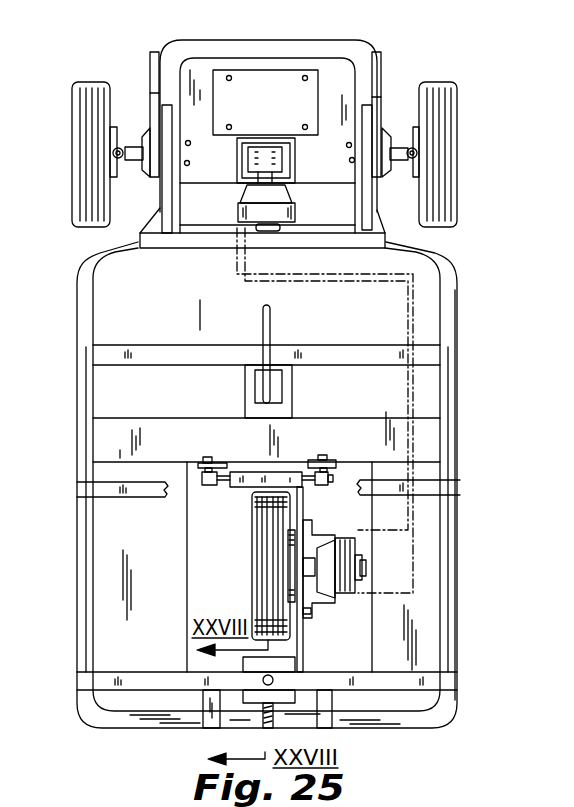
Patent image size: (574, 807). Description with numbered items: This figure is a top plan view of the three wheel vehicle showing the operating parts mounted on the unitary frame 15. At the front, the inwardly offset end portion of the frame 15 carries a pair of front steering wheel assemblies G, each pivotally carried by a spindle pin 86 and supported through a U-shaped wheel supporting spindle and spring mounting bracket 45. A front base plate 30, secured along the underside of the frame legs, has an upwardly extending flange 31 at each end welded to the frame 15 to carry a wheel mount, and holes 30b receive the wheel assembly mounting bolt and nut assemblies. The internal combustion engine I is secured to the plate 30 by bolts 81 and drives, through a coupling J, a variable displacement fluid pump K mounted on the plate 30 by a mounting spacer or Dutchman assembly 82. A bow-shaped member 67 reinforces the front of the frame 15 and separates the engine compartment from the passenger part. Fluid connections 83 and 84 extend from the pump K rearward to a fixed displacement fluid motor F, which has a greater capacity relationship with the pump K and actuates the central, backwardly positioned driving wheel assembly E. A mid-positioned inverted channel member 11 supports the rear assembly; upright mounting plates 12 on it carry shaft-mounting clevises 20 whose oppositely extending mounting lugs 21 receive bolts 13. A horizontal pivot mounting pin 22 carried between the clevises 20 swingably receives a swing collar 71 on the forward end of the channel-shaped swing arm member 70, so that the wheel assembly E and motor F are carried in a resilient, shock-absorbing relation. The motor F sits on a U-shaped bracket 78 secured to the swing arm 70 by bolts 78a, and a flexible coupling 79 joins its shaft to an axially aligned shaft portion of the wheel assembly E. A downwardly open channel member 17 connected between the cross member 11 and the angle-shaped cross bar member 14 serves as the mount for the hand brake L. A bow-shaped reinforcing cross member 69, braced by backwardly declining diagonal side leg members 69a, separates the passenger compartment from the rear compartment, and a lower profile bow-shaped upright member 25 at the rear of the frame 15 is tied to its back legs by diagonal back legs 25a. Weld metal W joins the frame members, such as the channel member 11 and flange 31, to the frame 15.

The bolts 81 is at (231, 75).
The upwardly extending flange 31 is at (378, 106).
The wheel supporting spindle and spring mounting bracket 45 is at (140, 148).
The spindle pin 86 is at (408, 150).
The front base plate 30 is at (353, 93).
The mounting spacer or Dutchman assembly 82 is at (237, 168).
The holes 30b is at (190, 158).
The fluid connection 84 is at (235, 271).
The fluid connection 83 is at (249, 276).
The bow-shaped member 67 is at (325, 246).
The frame 15 is at (460, 315).
The angle-shaped cross bar member 14 is at (349, 352).
The downwardly open channel member 17 is at (292, 382).
The inverted channel member 11 is at (372, 427).
The mounting lugs 21 is at (201, 479).
The pivot mounting pin 22 is at (226, 466).
The swing collar 71 is at (272, 480).
The mounting plates 12 is at (313, 460).
The bolts 13 is at (323, 460).
The shaft-mounting clevises 20 is at (211, 492).
The bow-shaped reinforcing cross member 69 is at (156, 497).
The diagonal side leg members 69a is at (87, 538).
The U-shaped bracket 78 is at (320, 534).
The bolts 78a is at (306, 615).
The flexible coupling 79 is at (337, 590).
The swing arm member 70 is at (307, 648).
The bow-shaped upright member 25 is at (150, 680).
The diagonal back legs 25a is at (205, 718).
The front steering wheel assemblies G is at (73, 133).
The internal combustion engine I is at (265, 102).
The coupling J is at (291, 158).
The variable displacement fluid pump K is at (297, 212).
The hand brake L is at (262, 326).
The driving wheel assembly E is at (245, 540).
The fluid motor F is at (347, 540).
The outlet pipe W is at (266, 728).